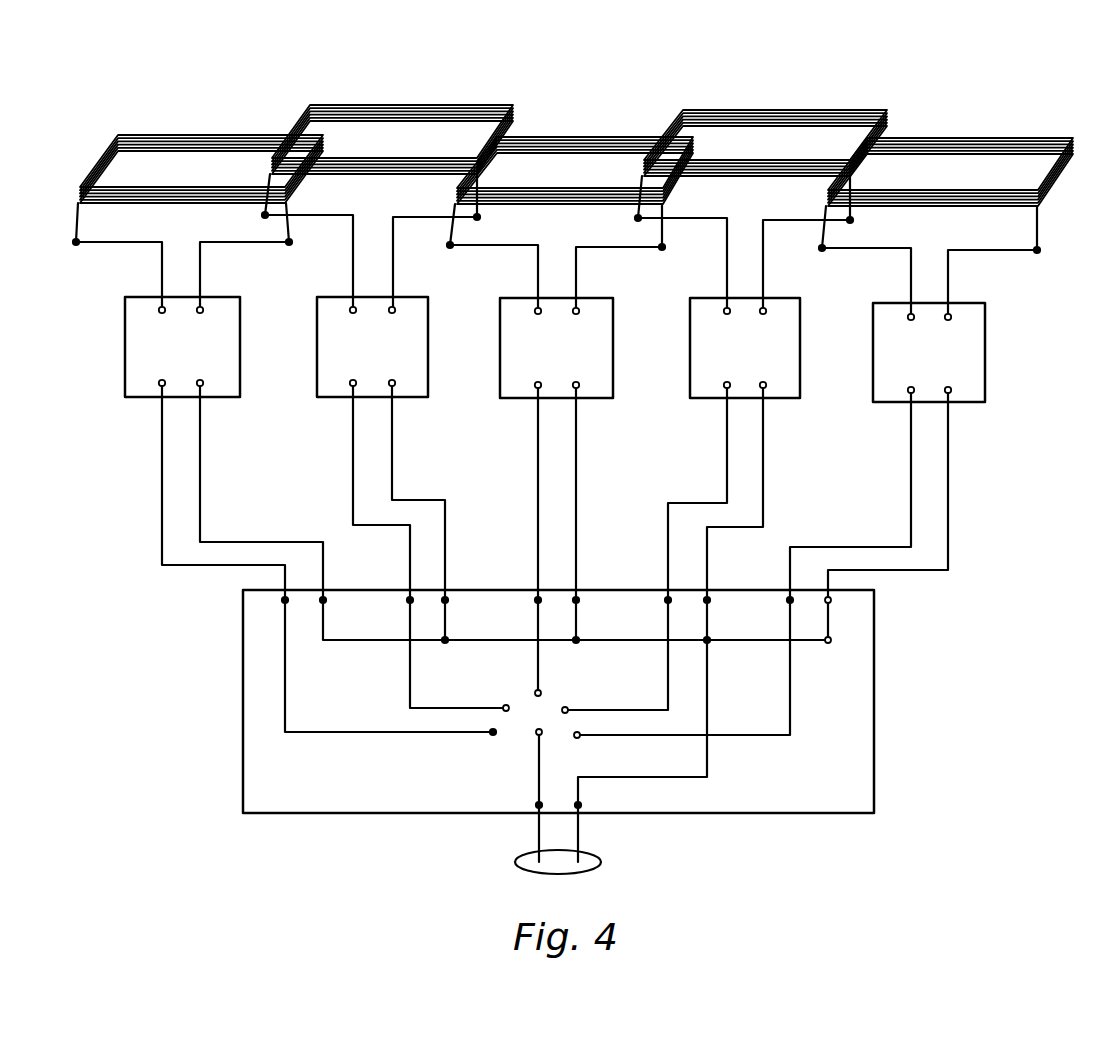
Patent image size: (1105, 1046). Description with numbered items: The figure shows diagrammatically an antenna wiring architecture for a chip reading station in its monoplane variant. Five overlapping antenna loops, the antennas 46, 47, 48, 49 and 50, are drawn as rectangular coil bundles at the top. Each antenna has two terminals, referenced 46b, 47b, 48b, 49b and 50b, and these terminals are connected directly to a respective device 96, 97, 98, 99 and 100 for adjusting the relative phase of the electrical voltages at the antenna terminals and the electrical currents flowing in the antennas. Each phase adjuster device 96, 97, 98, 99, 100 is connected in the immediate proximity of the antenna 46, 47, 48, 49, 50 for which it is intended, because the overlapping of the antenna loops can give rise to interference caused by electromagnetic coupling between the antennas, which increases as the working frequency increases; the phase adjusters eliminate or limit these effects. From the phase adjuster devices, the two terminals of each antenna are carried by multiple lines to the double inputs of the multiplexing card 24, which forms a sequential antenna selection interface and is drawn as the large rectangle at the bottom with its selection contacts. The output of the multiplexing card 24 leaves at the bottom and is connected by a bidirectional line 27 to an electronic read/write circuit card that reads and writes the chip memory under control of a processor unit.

The antenna 46 is at (185, 138).
The antenna 47 is at (388, 108).
The antenna 48 is at (584, 142).
The antenna 49 is at (773, 115).
The antenna 50 is at (970, 143).
The antenna terminals 46b is at (200, 308).
The antenna terminals 47b is at (392, 308).
The antenna terminals 48b is at (576, 308).
The antenna terminals 49b is at (763, 308).
The antenna terminals 50b is at (948, 314).
The phase adjuster device 96 is at (125, 343).
The phase adjuster device 97 is at (317, 343).
The phase adjuster device 98 is at (502, 345).
The phase adjuster device 99 is at (692, 345).
The phase adjuster device 100 is at (975, 355).
The multiplexing card 24 is at (875, 702).
The bidirectional line 27 is at (603, 860).